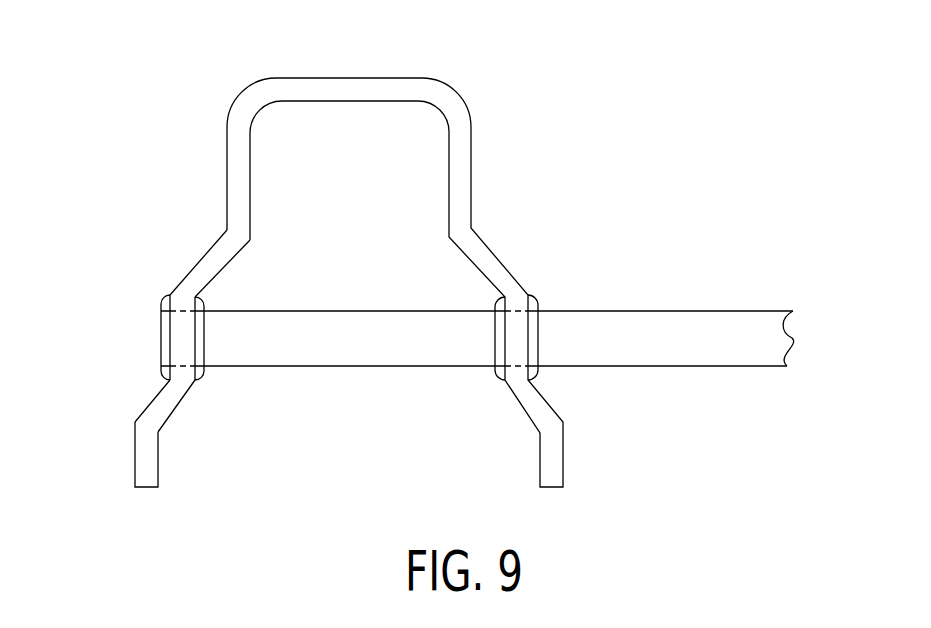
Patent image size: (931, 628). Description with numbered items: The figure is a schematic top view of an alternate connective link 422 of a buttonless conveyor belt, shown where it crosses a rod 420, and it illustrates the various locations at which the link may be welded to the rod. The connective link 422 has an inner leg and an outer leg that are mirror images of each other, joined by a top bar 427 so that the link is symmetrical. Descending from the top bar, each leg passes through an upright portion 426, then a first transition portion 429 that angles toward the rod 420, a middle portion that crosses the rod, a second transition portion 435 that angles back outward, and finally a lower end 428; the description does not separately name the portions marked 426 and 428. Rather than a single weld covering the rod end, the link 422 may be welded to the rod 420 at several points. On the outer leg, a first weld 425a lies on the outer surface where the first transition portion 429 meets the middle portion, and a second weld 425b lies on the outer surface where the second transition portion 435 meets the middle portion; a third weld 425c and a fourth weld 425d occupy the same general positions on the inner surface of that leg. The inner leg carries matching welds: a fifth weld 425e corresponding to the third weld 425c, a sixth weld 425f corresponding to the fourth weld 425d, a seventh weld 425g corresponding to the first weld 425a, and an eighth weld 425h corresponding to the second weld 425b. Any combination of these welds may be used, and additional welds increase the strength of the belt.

The rod 420 is at (692, 322).
The connective link 422 is at (350, 264).
The side wall 426 is at (230, 150).
The top bar 427 is at (350, 92).
The foot 428 is at (145, 477).
The first transition portion 429 is at (218, 252).
The second transition portion 435 is at (167, 407).
The first weld 425a is at (166, 295).
The second weld 425b is at (163, 376).
The third weld 425c is at (203, 300).
The fourth weld 425d is at (202, 377).
The fifth weld 425e is at (495, 302).
The sixth weld 425f is at (495, 380).
The seventh weld 425g is at (565, 275).
The eighth weld 425h is at (537, 377).